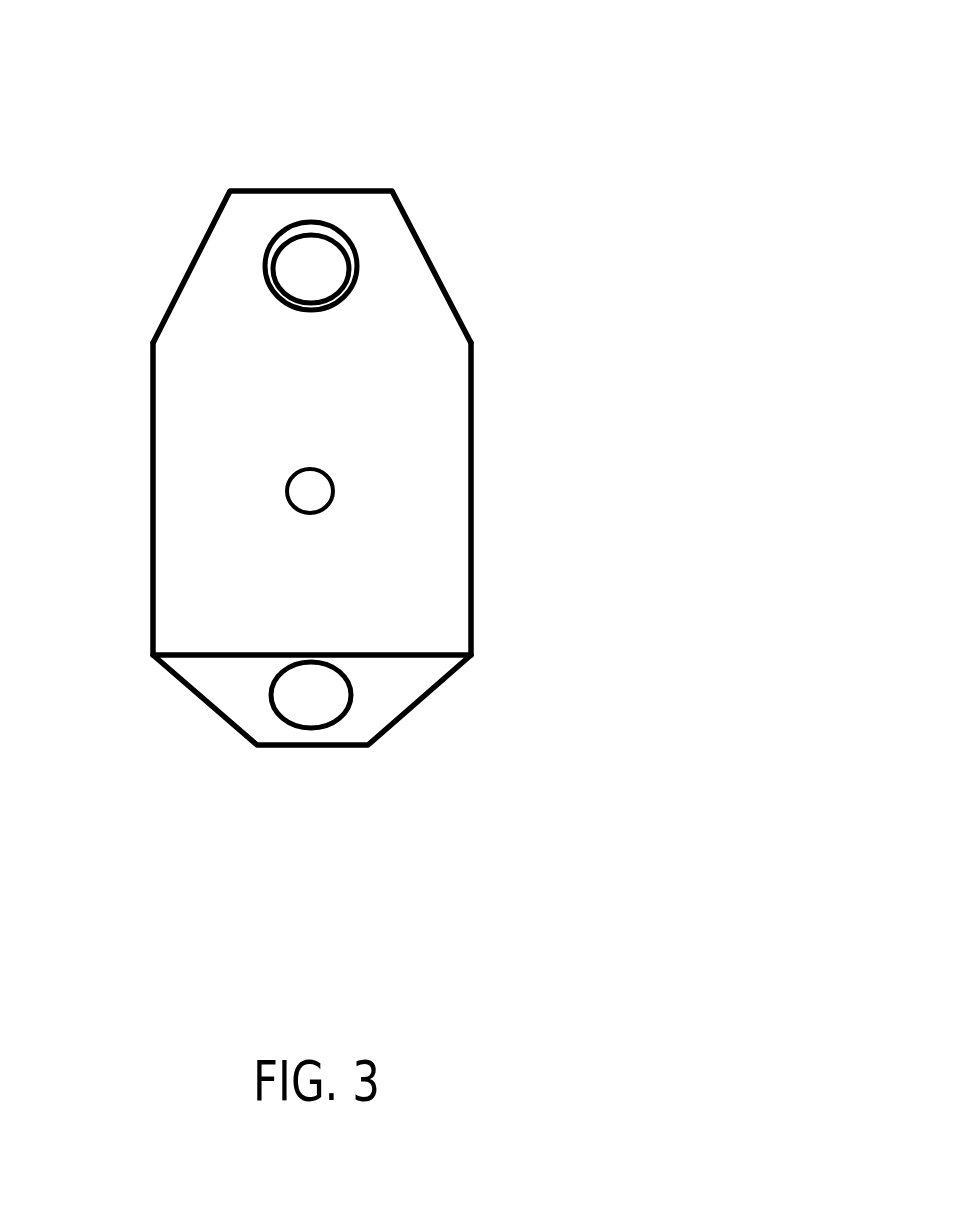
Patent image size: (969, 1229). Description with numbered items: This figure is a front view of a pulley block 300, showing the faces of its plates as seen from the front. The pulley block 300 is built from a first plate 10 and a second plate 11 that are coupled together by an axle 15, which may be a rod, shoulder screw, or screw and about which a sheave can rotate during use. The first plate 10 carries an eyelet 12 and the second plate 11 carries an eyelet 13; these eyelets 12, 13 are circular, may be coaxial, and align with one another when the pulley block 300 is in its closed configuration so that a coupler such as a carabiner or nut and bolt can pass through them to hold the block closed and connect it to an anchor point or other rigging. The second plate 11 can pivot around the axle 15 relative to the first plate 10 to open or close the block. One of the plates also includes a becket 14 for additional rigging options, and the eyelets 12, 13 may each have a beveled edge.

The pulley block 300 is at (401, 79).
The first plate 10 is at (284, 229).
The second plate 11 is at (420, 303).
The eyelet 12 is at (352, 238).
The eyelet 13 is at (268, 290).
The becket 14 is at (282, 718).
The axle 15 is at (318, 491).